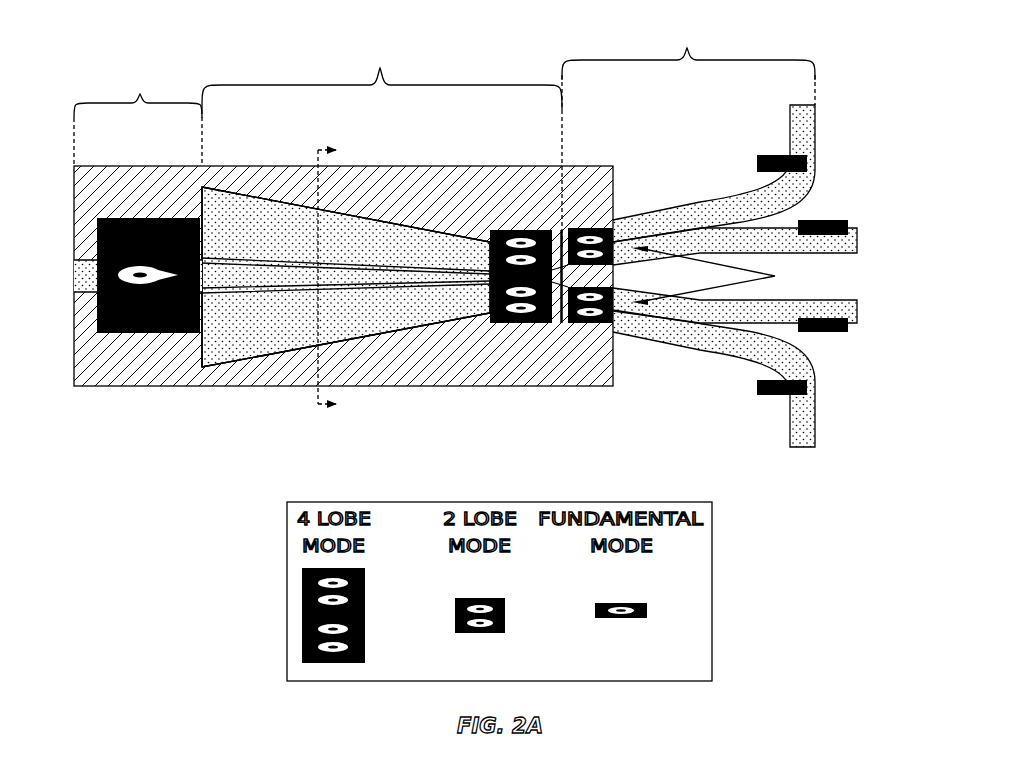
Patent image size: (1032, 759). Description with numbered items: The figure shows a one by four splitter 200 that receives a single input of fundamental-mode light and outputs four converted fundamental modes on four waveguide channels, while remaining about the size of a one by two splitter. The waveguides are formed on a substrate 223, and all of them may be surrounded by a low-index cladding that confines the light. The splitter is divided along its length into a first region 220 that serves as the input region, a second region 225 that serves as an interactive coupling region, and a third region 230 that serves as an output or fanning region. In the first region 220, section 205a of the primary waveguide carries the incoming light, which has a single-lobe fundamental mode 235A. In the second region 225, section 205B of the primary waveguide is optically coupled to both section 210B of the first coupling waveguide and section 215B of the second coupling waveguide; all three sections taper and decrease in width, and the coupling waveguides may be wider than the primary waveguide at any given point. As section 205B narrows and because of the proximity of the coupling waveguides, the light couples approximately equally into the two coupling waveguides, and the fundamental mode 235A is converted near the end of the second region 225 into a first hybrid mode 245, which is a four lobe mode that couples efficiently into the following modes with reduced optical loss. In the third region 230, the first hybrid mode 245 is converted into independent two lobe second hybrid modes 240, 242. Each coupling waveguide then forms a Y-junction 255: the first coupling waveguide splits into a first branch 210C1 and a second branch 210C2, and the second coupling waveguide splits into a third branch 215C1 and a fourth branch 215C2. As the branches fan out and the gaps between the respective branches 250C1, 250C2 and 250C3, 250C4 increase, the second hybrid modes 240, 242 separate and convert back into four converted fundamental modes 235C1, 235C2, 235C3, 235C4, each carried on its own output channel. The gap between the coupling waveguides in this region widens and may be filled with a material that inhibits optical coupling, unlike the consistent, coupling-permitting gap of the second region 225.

The one by four splitter 200 is at (107, 46).
The first region 220 is at (138, 122).
The second region 225 is at (382, 79).
The substrate 223 is at (461, 166).
The third region 230 is at (688, 140).
The fundamental mode 235A is at (146, 217).
The section of the primary waveguide 205a is at (78, 271).
The section of the primary waveguide 205B is at (271, 258).
The section of the first coupling waveguide 210B is at (423, 223).
The section of the second coupling waveguide 215B is at (426, 326).
The first hybrid mode 245 is at (517, 230).
The second hybrid mode 240 is at (577, 228).
The second hybrid mode 242 is at (570, 324).
The first branch 210C1 is at (641, 215).
The second branch 210C2 is at (687, 232).
The third branch 215C1 is at (636, 340).
The fourth branch 215C2 is at (688, 328).
The branch 250C1 is at (816, 130).
The branch 250C2 is at (858, 240).
The branch 250C3 is at (858, 310).
The branch 250C4 is at (816, 420).
The converted fundamental mode 235C1 is at (764, 156).
The converted fundamental mode 235C2 is at (828, 220).
The converted fundamental mode 235C3 is at (830, 333).
The converted fundamental mode 235C4 is at (768, 397).
The Y-junction 255 is at (776, 276).